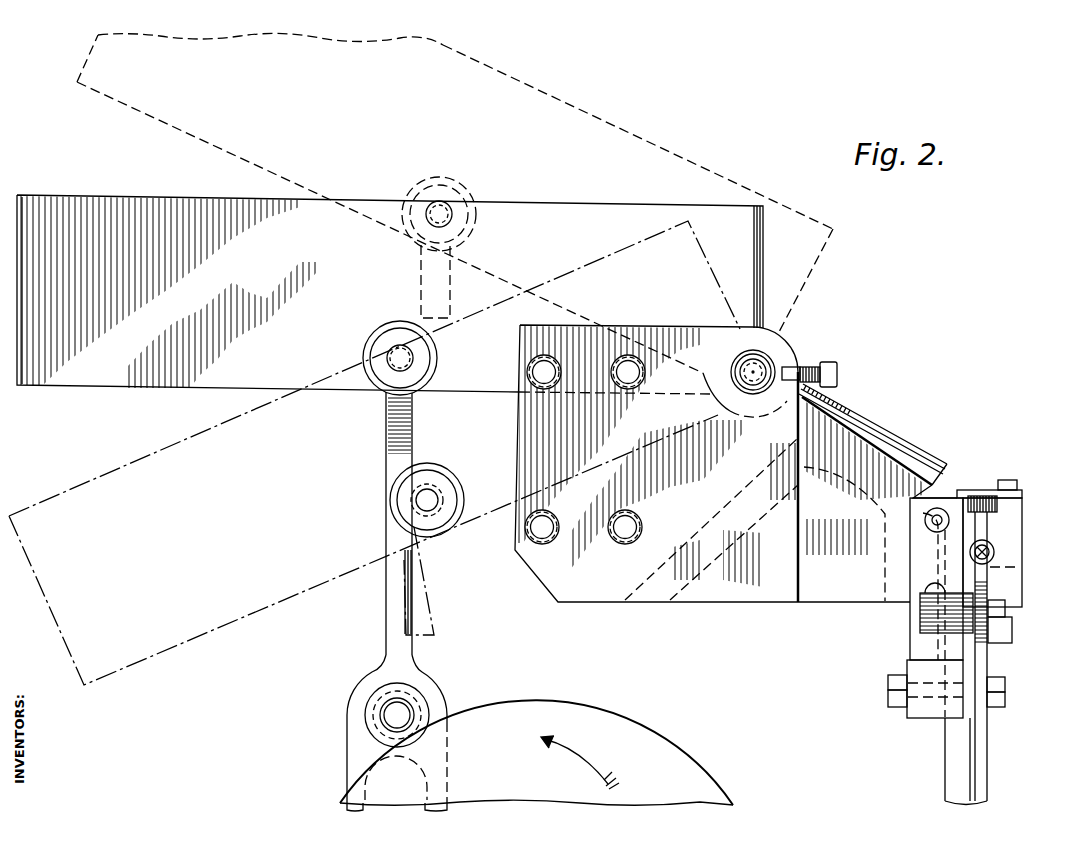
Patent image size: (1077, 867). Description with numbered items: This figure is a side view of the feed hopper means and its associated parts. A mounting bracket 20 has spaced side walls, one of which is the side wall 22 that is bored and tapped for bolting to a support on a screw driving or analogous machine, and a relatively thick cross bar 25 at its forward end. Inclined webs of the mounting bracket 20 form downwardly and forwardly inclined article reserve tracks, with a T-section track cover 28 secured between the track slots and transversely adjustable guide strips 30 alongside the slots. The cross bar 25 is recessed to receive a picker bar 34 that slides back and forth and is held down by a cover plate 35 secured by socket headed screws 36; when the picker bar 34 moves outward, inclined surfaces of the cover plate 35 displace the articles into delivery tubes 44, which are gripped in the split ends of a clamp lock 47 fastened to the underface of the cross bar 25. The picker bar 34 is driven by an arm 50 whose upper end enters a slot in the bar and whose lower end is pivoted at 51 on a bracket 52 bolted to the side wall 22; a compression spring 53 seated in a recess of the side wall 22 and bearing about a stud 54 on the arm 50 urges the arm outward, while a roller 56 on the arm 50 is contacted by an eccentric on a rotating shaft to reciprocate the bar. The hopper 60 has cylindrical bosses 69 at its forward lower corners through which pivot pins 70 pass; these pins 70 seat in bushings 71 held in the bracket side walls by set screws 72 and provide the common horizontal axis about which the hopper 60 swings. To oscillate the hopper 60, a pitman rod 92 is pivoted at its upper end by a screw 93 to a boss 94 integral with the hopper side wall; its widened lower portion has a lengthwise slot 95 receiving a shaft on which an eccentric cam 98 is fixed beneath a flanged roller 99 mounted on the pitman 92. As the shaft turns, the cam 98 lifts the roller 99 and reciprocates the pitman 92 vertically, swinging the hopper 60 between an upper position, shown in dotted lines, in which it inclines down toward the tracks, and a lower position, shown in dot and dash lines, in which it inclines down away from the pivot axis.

The mounting bracket 20 is at (722, 609).
The side wall 22 is at (585, 588).
The cross bar 25 is at (1008, 528).
The track cover 28 is at (878, 428).
The guide strips 30 is at (895, 467).
The picker bar 34 is at (965, 494).
The cover plate 35 is at (987, 490).
The socket headed screws 36 is at (1017, 481).
The delivery tubes 44 is at (951, 775).
The clamp lock 47 is at (990, 643).
The arm 50 is at (983, 523).
The pivot 51 is at (897, 683).
The bracket 52 is at (918, 565).
The compression spring 53 is at (993, 550).
The stud 54 is at (990, 567).
The roller 56 is at (955, 633).
The hopper 60 is at (71, 193).
The cylindrical bosses 69 is at (779, 337).
The pivot pins 70 is at (747, 364).
The bushings 71 is at (777, 364).
The set screws 72 is at (838, 372).
The pitman rod 92 is at (425, 273).
The screw 93 is at (452, 221).
The boss 94 is at (439, 178).
The lengthwise slot 95 is at (425, 777).
The eccentric cam 98 is at (651, 744).
The flanged roller 99 is at (380, 687).